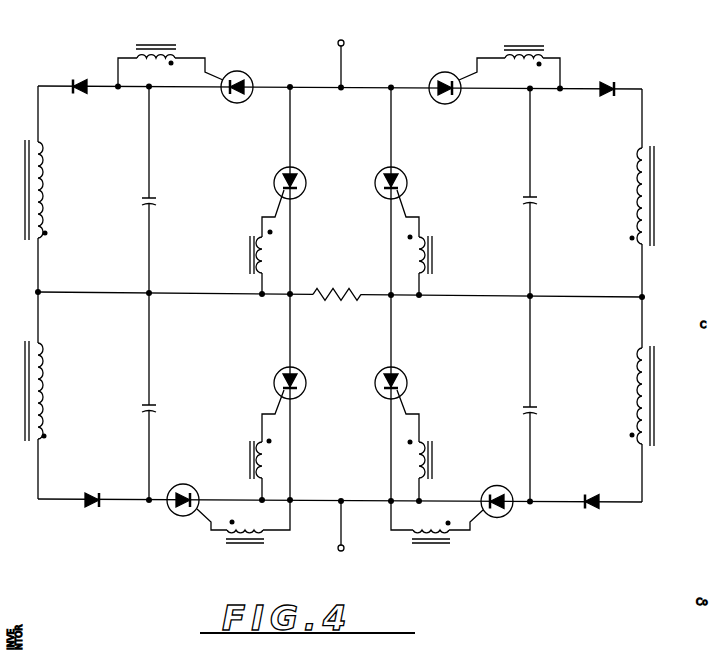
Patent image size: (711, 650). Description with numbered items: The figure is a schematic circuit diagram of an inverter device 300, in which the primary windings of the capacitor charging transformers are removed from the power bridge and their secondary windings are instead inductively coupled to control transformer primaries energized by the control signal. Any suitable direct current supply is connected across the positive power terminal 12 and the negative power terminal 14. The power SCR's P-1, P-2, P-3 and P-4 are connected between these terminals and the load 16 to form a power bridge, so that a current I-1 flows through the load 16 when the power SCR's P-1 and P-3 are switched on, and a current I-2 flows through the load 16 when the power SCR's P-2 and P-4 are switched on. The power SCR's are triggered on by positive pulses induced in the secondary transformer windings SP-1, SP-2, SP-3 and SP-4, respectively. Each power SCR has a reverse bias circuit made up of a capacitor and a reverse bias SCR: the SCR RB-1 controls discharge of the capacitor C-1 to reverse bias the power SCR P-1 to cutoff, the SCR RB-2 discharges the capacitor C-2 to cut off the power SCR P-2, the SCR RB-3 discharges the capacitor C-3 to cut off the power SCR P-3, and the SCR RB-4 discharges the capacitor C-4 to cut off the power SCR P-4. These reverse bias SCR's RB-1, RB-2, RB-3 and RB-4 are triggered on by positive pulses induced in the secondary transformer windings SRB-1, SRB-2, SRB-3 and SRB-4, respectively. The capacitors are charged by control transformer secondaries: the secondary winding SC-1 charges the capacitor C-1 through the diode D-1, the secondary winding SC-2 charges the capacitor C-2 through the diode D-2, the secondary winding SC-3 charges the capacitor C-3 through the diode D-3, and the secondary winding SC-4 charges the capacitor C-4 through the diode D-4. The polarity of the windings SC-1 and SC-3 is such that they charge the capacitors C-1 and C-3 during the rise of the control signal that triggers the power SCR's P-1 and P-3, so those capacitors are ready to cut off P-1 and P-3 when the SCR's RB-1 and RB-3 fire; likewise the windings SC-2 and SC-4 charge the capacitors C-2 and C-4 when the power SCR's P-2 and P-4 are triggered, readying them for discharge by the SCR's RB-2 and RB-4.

The positive power terminal 12 is at (345, 45).
The negative power terminal 14 is at (337, 550).
The load 16 is at (363, 290).
The inverter device 300 is at (650, 119).
The diode D-1 is at (81, 79).
The diode D-2 is at (608, 86).
The diode D-3 is at (594, 494).
The diode D-4 is at (94, 490).
The reverse bias SCR RB-1 is at (228, 104).
The reverse bias SCR RB-2 is at (457, 106).
The reverse bias SCR RB-3 is at (511, 479).
The reverse bias SCR RB-4 is at (195, 474).
The secondary transformer winding SRB-1 is at (178, 50).
The secondary transformer winding SRB-2 is at (500, 50).
The secondary transformer winding SRB-3 is at (460, 538).
The secondary transformer winding SRB-4 is at (238, 547).
The power SCR P-1 is at (273, 180).
The power SCR P-2 is at (405, 179).
The power SCR P-3 is at (406, 387).
The power SCR P-4 is at (275, 378).
The secondary transformer winding SP-1 is at (248, 253).
The secondary transformer winding SP-2 is at (434, 258).
The secondary transformer winding SP-3 is at (431, 445).
The secondary transformer winding SP-4 is at (247, 446).
The secondary winding SC-1 is at (44, 178).
The secondary winding SC-2 is at (639, 172).
The secondary winding SC-3 is at (639, 380).
The secondary winding SC-4 is at (43, 385).
The capacitor C-1 is at (142, 194).
The capacitor C-2 is at (538, 202).
The capacitor C-3 is at (537, 406).
The capacitor C-4 is at (141, 400).
The current I-1 is at (298, 110).
The current I-2 is at (382, 110).